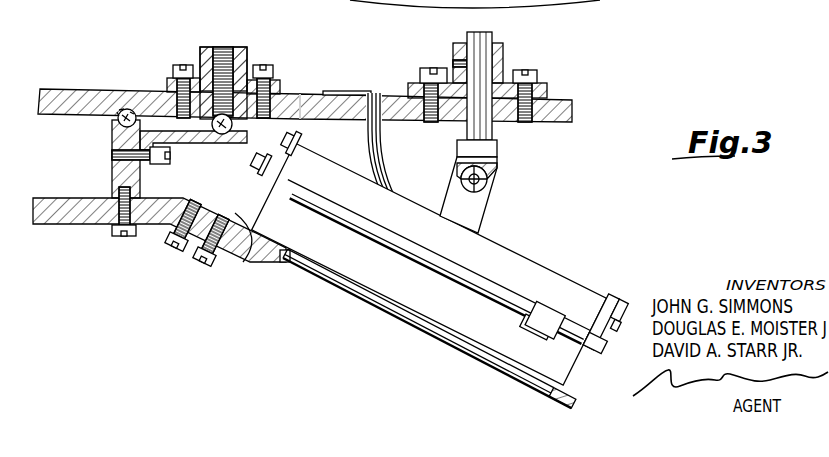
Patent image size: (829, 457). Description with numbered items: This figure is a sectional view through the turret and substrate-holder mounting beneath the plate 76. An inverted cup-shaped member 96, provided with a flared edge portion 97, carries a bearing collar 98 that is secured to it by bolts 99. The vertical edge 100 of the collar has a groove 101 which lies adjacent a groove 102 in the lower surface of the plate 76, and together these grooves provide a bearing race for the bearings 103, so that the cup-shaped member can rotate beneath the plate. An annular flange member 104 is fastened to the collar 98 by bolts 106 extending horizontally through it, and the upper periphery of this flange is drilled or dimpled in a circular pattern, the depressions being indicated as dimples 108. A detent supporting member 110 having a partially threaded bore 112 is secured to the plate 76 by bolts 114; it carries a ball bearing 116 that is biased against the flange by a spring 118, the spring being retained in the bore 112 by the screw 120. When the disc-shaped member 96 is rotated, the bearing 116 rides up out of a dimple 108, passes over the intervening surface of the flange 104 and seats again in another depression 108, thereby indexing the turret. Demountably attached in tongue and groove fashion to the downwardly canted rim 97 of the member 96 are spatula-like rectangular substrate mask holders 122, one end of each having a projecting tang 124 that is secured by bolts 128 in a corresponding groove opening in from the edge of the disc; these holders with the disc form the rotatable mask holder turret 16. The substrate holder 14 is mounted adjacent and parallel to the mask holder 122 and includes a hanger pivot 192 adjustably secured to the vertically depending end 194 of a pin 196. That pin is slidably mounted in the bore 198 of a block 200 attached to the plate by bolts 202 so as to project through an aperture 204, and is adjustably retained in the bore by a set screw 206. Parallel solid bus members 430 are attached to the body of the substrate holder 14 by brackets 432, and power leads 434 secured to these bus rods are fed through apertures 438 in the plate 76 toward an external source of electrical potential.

The substrate holder 14 is at (576, 272).
The rotatable mask holder turret 16 is at (347, 300).
The plate 76 is at (574, 124).
The inverted cup-shaped member 96 is at (80, 218).
The flared edge portion 97 is at (243, 258).
The bearing collar 98 is at (112, 177).
The bolts 99 is at (123, 238).
The vertical edge 100 is at (114, 119).
The groove 101 is at (131, 111).
The groove 102 is at (119, 113).
The bearings 103 is at (122, 110).
The annular flange member 104 is at (177, 143).
The bolts 106 is at (112, 158).
The dimples 108 is at (220, 140).
The detent supporting member 110 is at (207, 47).
The partially threaded bore 112 is at (237, 67).
The bolts 114 is at (175, 70).
The bearing 116 is at (293, 103).
The spring 118 is at (213, 80).
The screw 120 is at (229, 47).
The substrate mask holder 122 is at (393, 311).
The projecting tang 124 is at (255, 244).
The bolts 128 is at (200, 253).
The hanger pivot 192 is at (478, 213).
The vertically depending end 194 is at (497, 164).
The pin 196 is at (491, 36).
The bore 198 is at (500, 63).
The block 200 is at (562, 96).
The bolts 202 is at (427, 72).
The aperture 204 is at (492, 136).
The set screw 206 is at (453, 63).
The bus members 430 is at (497, 291).
The brackets 432 is at (530, 332).
The power leads 434 is at (347, 92).
The apertures 438 is at (373, 97).